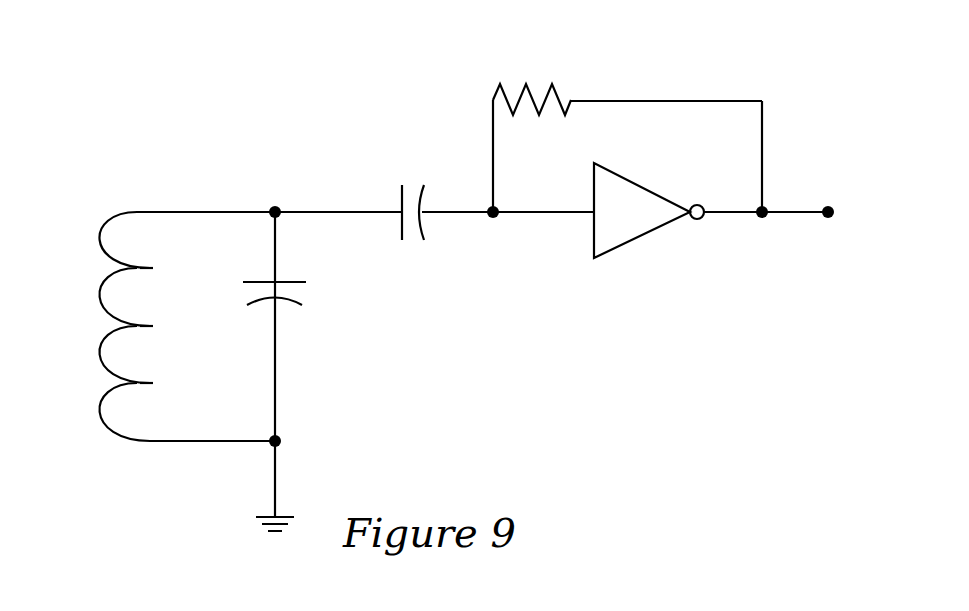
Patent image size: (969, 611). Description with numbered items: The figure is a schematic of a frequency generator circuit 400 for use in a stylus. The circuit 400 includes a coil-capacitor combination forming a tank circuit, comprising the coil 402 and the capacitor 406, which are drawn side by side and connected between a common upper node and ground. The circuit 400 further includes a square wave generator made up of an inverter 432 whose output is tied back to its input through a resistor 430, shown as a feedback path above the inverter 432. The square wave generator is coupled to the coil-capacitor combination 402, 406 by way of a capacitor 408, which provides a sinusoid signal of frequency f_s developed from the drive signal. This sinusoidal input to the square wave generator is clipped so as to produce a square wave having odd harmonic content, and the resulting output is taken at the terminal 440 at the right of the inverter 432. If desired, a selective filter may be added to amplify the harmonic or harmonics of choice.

The circuit 400 is at (210, 176).
The coil 402 is at (100, 300).
The capacitor 406 is at (290, 280).
The capacitor 408 is at (398, 197).
The resistor 430 is at (543, 93).
The inverter 432 is at (643, 232).
The output terminal 440 is at (793, 212).